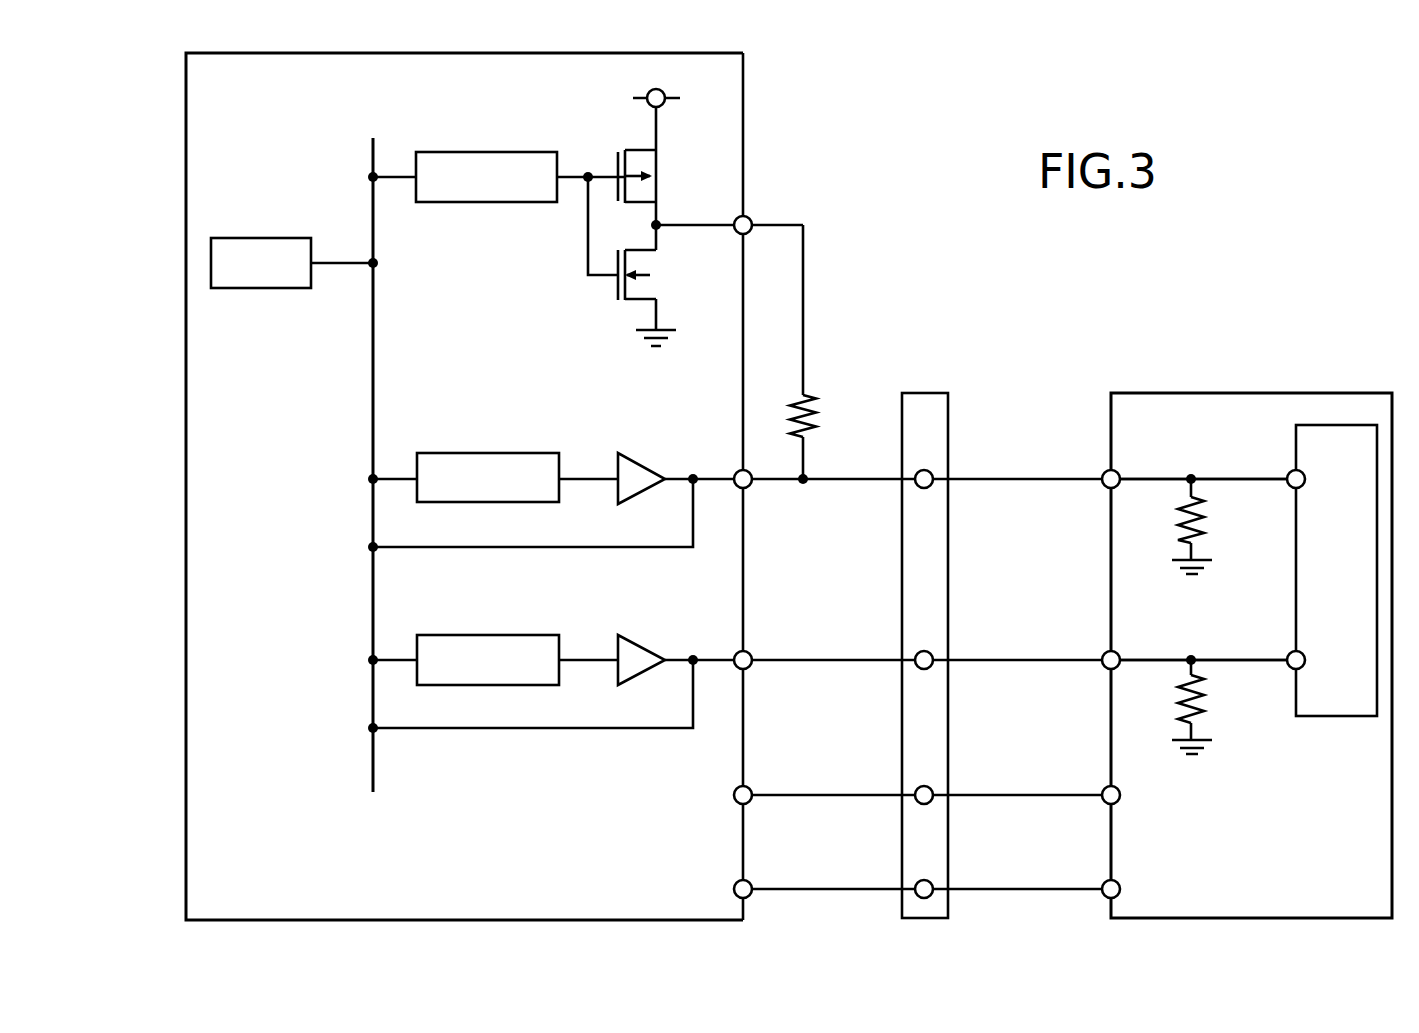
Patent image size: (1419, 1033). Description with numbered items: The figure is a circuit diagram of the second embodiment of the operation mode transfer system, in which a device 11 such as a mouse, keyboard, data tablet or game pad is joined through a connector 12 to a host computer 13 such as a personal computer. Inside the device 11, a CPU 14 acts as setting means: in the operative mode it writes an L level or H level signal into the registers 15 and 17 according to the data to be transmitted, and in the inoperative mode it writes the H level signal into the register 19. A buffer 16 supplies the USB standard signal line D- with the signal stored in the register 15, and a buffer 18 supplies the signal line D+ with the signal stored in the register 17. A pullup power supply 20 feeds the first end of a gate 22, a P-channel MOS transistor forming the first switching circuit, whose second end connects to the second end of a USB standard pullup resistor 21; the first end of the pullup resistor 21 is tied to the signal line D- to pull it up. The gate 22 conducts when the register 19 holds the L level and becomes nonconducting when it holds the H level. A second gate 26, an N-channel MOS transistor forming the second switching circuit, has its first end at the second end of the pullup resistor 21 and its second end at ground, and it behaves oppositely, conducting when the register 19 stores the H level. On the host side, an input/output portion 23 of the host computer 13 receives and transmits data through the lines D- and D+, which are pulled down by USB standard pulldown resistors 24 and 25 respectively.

The device 11 is at (745, 101).
The connector 12 is at (924, 392).
The host computer 13 is at (1243, 392).
The CPU 14 is at (258, 237).
The register 15 is at (488, 452).
The buffer 16 is at (641, 463).
The register 17 is at (488, 631).
The buffer 18 is at (643, 645).
The register 19 is at (487, 151).
The pullup power supply 20 is at (648, 95).
The pullup resistor 21 is at (815, 401).
The gate 22 is at (664, 168).
The input/output portion 23 is at (1330, 718).
The pulldown resistor 24 is at (1208, 526).
The pulldown resistor 25 is at (1208, 706).
The gate 26 is at (664, 278).